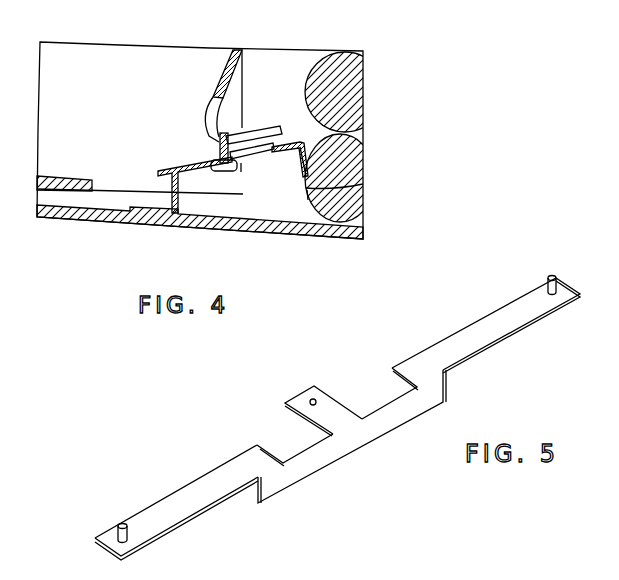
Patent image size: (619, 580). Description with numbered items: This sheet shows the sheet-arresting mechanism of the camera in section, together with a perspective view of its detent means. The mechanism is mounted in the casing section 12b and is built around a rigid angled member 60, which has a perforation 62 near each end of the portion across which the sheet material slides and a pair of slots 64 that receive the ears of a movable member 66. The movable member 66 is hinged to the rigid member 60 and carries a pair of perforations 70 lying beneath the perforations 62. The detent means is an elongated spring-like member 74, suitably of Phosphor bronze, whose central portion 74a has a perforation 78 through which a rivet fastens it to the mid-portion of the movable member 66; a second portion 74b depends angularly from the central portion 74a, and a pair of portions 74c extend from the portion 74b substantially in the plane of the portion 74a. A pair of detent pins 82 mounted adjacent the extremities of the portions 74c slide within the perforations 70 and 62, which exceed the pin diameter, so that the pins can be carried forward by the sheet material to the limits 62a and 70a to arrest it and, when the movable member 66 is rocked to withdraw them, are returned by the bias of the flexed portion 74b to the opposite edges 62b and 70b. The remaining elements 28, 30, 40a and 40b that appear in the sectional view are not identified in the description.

In FIG. 4, the casing section 12b is at (153, 218).
In FIG. 4, the upper roll 28 is at (343, 65).
In FIG. 4, the lower roll 30 is at (356, 161).
In FIG. 4, the upper flange 40a is at (226, 62).
In FIG. 4, the lower flange 40b is at (89, 140).
In FIG. 4, the rigid angled member 60 is at (341, 185).
In FIG. 4, the perforation 62 is at (223, 123).
In FIG. 4, the perforation limit 62a is at (307, 118).
In FIG. 4, the perforation edge 62b is at (218, 143).
In FIG. 4, the slots 64 is at (158, 177).
In FIG. 4, the movable member 66 is at (307, 190).
In FIG. 4, the perforations 70 is at (250, 160).
In FIG. 4, the perforation limit 70a is at (293, 180).
In FIG. 4, the perforation edge 70b is at (241, 163).
In FIG. 4, the elongated member 74 is at (224, 176).
In FIG. 5, the elongated member 74 is at (351, 409).
In FIG. 5, the central portion 74a is at (310, 393).
In FIG. 5, the second portion 74b is at (364, 436).
In FIG. 5, the portions 74c is at (503, 316).
In FIG. 5, the perforation 78 is at (311, 400).
In FIG. 4, the detent pins 82 is at (217, 108).
In FIG. 5, the detent pins 82 is at (556, 285).